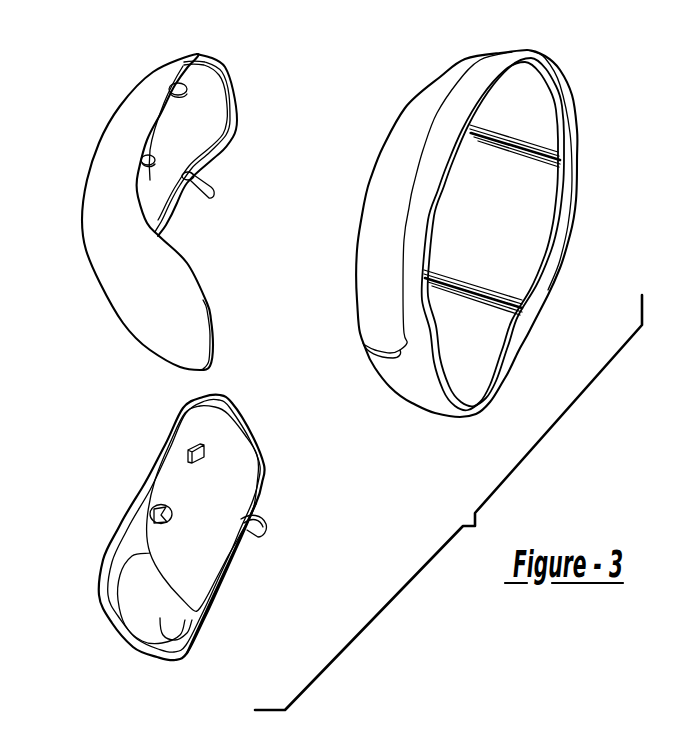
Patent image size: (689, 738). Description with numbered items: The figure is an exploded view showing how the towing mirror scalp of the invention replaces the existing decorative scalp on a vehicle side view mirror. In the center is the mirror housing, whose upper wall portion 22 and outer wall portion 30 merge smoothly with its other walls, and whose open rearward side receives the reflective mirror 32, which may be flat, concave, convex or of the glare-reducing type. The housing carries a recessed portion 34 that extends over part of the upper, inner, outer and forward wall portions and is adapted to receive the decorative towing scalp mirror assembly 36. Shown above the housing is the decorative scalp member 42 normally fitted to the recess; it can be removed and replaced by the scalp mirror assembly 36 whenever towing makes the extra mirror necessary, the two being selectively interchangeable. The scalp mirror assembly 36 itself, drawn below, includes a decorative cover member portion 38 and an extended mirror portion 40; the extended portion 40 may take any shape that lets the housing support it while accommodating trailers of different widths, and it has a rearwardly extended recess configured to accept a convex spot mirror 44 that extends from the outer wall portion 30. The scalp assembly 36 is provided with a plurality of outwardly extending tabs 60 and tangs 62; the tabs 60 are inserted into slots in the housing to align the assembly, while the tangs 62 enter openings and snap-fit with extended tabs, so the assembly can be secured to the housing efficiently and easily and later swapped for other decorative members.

The upper wall portion 22 is at (485, 87).
The outer wall portion 30 is at (405, 395).
The reflective mirror 32 is at (520, 240).
The recessed portion 34 is at (403, 133).
The decorative towing scalp mirror assembly 36 is at (217, 590).
The decorative cover member portion 38 is at (140, 470).
The extended mirror portion 40 is at (120, 600).
The decorative scalp member 42 is at (96, 144).
The convex spot mirror 44 is at (163, 630).
The tabs 60 is at (187, 450).
The tangs 62 is at (263, 530).